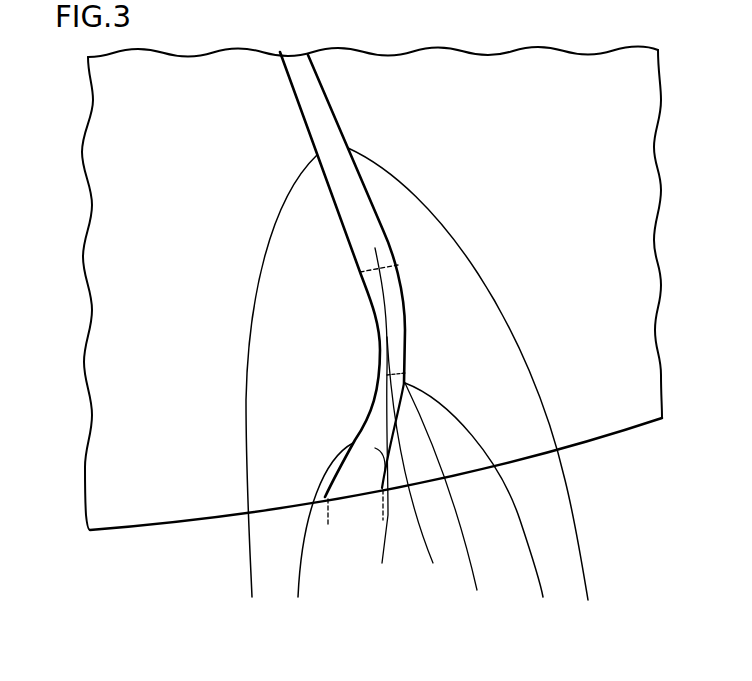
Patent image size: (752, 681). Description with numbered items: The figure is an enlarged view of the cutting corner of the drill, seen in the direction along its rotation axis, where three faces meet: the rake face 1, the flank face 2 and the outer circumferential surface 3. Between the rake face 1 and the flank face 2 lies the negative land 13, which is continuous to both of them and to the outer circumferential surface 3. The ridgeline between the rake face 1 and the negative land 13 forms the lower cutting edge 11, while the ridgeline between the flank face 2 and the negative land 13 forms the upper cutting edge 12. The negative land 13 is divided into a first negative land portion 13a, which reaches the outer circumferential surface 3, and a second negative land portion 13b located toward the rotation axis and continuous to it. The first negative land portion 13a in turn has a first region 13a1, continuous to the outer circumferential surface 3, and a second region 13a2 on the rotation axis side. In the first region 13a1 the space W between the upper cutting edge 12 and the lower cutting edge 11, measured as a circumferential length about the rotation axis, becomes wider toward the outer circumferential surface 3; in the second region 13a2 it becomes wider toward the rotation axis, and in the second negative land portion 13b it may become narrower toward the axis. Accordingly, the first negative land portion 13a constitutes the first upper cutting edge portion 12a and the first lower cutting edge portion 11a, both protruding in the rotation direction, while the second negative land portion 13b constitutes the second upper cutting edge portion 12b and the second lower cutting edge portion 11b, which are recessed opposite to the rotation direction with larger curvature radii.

The rake face 1 is at (586, 374).
The flank face 2 is at (193, 445).
The outer circumferential surface 3 is at (143, 530).
The lower cutting edge 11 is at (484, 405).
The first lower cutting edge portion 11a is at (485, 505).
The second lower cutting edge portion 11b is at (520, 620).
The upper cutting edge 12 is at (289, 409).
The first upper cutting edge portion 12a is at (315, 535).
The second upper cutting edge portion 12b is at (274, 391).
The negative land 13 is at (429, 455).
The first negative land portion 13a is at (411, 438).
The first region 13a1 is at (381, 420).
The second region 13a2 is at (423, 465).
The second negative land portion 13b is at (451, 506).
The space W is at (382, 507).